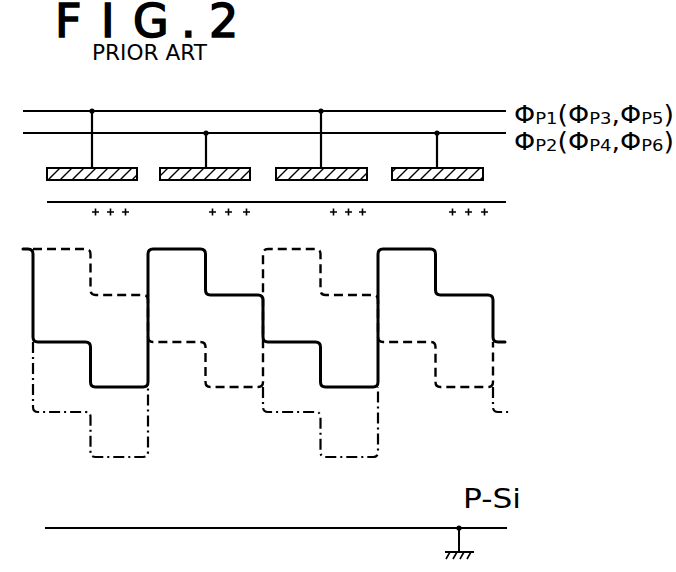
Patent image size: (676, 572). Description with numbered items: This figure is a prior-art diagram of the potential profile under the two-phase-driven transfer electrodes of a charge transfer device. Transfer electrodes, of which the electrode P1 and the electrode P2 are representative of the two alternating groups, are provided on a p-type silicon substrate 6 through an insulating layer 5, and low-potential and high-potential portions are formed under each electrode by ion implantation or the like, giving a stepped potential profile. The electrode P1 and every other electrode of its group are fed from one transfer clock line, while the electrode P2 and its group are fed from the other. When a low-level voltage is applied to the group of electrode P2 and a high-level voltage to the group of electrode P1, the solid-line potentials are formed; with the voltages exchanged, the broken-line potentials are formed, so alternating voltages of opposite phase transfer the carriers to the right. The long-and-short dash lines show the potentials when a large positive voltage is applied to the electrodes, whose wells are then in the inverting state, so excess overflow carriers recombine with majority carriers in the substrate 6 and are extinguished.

The transfer electrode P1 is at (128, 168).
The transfer electrode P2 is at (240, 168).
The insulating layer 5 is at (506, 193).
The p-type silicon substrate 6 is at (498, 256).